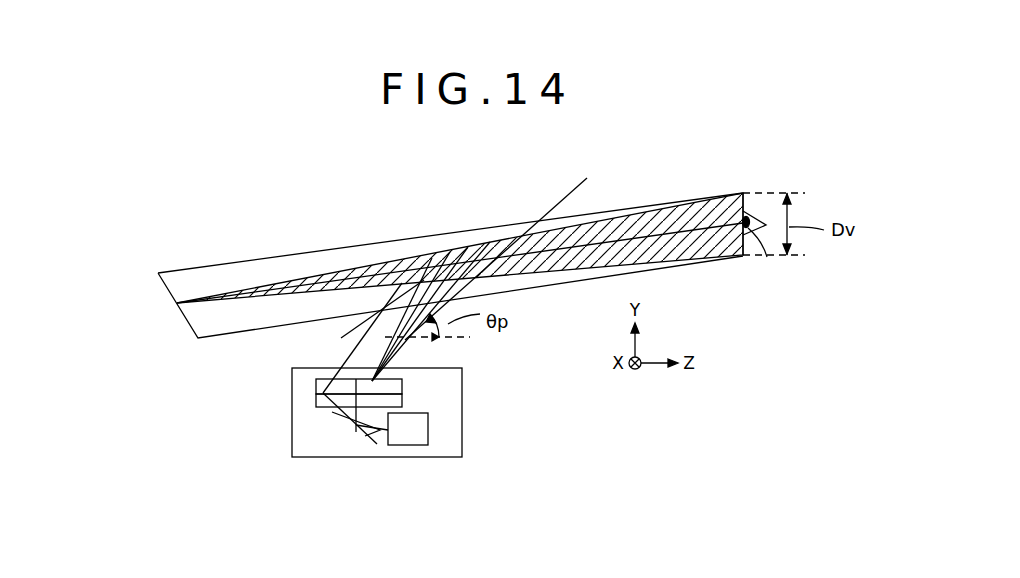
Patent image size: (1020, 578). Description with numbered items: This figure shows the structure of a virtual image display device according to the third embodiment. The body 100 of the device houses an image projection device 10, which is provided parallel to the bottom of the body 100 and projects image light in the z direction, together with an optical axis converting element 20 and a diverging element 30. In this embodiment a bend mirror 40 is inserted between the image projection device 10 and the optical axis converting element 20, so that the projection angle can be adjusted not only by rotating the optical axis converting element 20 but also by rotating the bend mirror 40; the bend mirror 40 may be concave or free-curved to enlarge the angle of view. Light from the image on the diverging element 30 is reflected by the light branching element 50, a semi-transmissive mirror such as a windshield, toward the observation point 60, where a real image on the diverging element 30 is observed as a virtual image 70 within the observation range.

The image projection device 10 is at (410, 440).
The optical axis converting element 20 is at (316, 402).
The diverging element 30 is at (316, 387).
The bend mirror 40 is at (375, 441).
The light branching element 50 is at (557, 192).
The observation point 60 is at (476, 248).
The virtual image 70 is at (170, 292).
The body 100 is at (420, 432).